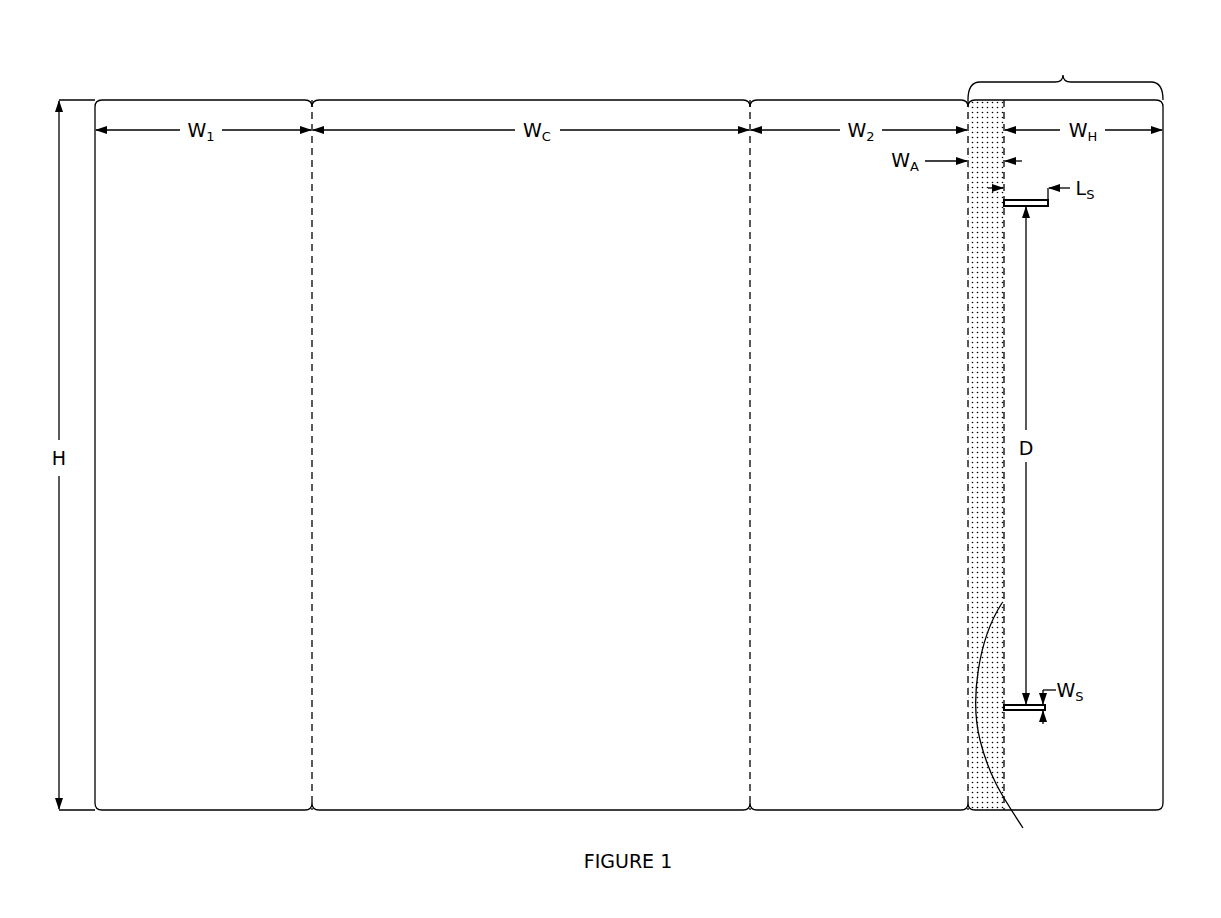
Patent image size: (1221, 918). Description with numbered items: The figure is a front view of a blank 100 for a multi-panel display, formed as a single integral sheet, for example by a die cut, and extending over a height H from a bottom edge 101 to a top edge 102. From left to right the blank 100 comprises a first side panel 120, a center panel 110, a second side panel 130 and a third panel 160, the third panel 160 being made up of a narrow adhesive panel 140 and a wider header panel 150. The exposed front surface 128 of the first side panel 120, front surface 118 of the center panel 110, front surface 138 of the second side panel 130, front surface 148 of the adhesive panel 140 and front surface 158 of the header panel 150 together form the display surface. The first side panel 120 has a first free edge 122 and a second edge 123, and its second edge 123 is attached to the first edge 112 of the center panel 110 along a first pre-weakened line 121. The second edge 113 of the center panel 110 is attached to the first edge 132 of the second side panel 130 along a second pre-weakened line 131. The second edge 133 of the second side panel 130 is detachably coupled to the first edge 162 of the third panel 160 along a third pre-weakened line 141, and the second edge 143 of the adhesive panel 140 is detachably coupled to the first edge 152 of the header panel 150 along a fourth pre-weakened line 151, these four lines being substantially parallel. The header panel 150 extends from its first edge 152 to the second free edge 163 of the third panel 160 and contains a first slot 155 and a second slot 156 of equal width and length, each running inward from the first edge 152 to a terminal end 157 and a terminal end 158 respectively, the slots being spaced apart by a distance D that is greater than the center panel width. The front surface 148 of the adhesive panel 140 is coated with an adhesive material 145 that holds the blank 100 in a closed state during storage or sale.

The blank 100 is at (140, 87).
The bottom edge 101 is at (510, 810).
The top edge 102 is at (480, 100).
The center panel 110 is at (521, 459).
The first edge of the center panel 112 is at (310, 156).
The second edge of the center panel 113 is at (753, 183).
The front surface of the center panel 118 is at (454, 747).
The first side panel 120 is at (172, 459).
The first pre-weakened line 121 is at (312, 748).
The first free edge of the first side panel 122 is at (95, 278).
The second edge of the first side panel 123 is at (314, 184).
The front surface of the first side panel 128 is at (157, 746).
The second side panel 130 is at (854, 459).
The second pre-weakened line 131 is at (750, 745).
The first edge of the second side panel 132 is at (748, 155).
The second edge of the second side panel 133 is at (968, 743).
The front surface of the second side panel 138 is at (881, 747).
The adhesive panel 140 is at (992, 548).
The third pre-weakened line 141 is at (967, 763).
The second edge of the adhesive panel 143 is at (1005, 727).
The adhesive material 145 is at (992, 648).
The front surface of the adhesive panel 148 is at (984, 770).
The header panel 150 is at (1062, 459).
The fourth pre-weakened line 151 is at (1005, 765).
The first edge of the header panel 152 is at (1017, 726).
The first slot 155 is at (1036, 210).
The second slot 156 is at (1030, 712).
The terminal end of the first slot 157 is at (1040, 206).
The terminal end of the second slot 158 is at (1048, 708).
The third panel 160 is at (1065, 76).
The first edge of the third panel 162 is at (968, 680).
The second free edge of the third panel 163 is at (1163, 703).